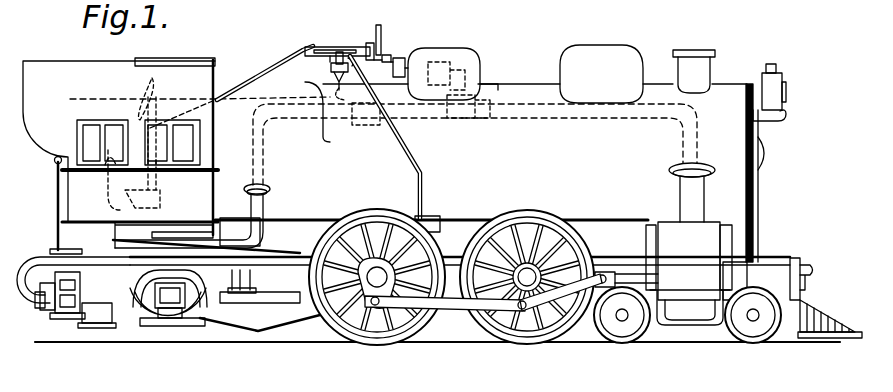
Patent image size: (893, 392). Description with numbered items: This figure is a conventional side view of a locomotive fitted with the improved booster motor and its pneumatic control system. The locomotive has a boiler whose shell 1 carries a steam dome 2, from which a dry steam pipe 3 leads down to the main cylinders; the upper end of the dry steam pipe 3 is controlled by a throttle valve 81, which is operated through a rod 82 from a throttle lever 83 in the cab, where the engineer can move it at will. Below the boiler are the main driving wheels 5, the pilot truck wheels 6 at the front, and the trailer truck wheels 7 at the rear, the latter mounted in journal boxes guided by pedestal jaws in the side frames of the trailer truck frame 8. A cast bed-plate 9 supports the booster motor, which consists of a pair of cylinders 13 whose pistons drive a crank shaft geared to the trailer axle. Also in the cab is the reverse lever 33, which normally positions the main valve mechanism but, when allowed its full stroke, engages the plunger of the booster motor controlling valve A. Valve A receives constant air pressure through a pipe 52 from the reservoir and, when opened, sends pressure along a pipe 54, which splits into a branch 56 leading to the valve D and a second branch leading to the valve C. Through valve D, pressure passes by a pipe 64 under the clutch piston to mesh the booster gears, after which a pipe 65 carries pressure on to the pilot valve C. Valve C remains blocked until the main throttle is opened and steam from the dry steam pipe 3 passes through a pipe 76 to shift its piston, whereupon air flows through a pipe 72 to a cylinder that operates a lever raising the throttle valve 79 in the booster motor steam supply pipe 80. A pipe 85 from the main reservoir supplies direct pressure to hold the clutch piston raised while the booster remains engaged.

The shell of locomotive boiler 1 is at (439, 191).
The steam dome 2 is at (478, 62).
The dry steam pipe 3 is at (613, 112).
The main driving wheels 5 is at (385, 337).
The pilot truck wheels 6 is at (629, 332).
The trailer truck wheels 7 is at (165, 332).
The trailer truck frame 8 is at (268, 320).
The bed-plate 9 is at (96, 324).
The cylinders 13 is at (45, 305).
The reverse lever 33 is at (108, 202).
The booster motor controlling valve A is at (138, 195).
The pipe 52 is at (184, 232).
The pipe 54 is at (256, 77).
The branch pipe 56 is at (333, 64).
The pipe 64 is at (330, 50).
The pipe 65 is at (381, 32).
The pipe 72 is at (387, 55).
The pipe 76 is at (498, 86).
The throttle valve 79 is at (368, 126).
The booster motor steam supply pipe 80 is at (422, 118).
The throttle valve 81 is at (453, 58).
The rod 82 is at (243, 102).
The throttle lever 83 is at (143, 110).
The pipe 85 is at (352, 50).
The pilot valve C is at (399, 58).
The valve D is at (338, 58).